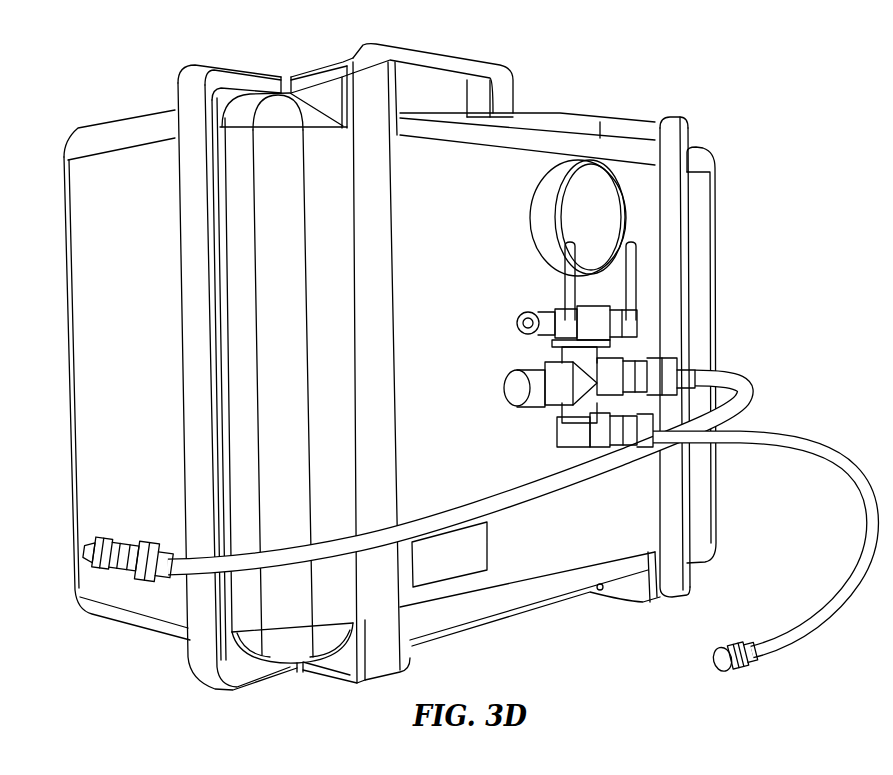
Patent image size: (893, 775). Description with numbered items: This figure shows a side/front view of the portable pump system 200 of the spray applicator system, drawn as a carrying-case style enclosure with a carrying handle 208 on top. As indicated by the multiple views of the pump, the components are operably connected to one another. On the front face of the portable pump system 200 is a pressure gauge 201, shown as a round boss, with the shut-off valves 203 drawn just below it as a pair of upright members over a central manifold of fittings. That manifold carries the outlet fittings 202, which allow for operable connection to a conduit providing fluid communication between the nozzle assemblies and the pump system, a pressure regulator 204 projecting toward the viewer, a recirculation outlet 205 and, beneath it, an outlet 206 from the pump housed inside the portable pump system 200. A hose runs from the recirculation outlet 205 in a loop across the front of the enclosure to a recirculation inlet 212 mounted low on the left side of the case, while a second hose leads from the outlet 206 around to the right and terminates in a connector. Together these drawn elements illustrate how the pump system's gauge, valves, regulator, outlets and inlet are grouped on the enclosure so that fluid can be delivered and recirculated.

The portable pump system 200 is at (153, 93).
The pressure gauge 201 is at (587, 204).
The outlet fittings 202 is at (537, 313).
The shut-off valves 203 is at (633, 260).
The pressure regulator 204 is at (553, 393).
The recirculation outlet 205 is at (627, 360).
The outlet 206 is at (580, 433).
The carrying handle 208 is at (437, 57).
The recirculation inlet 212 is at (163, 540).